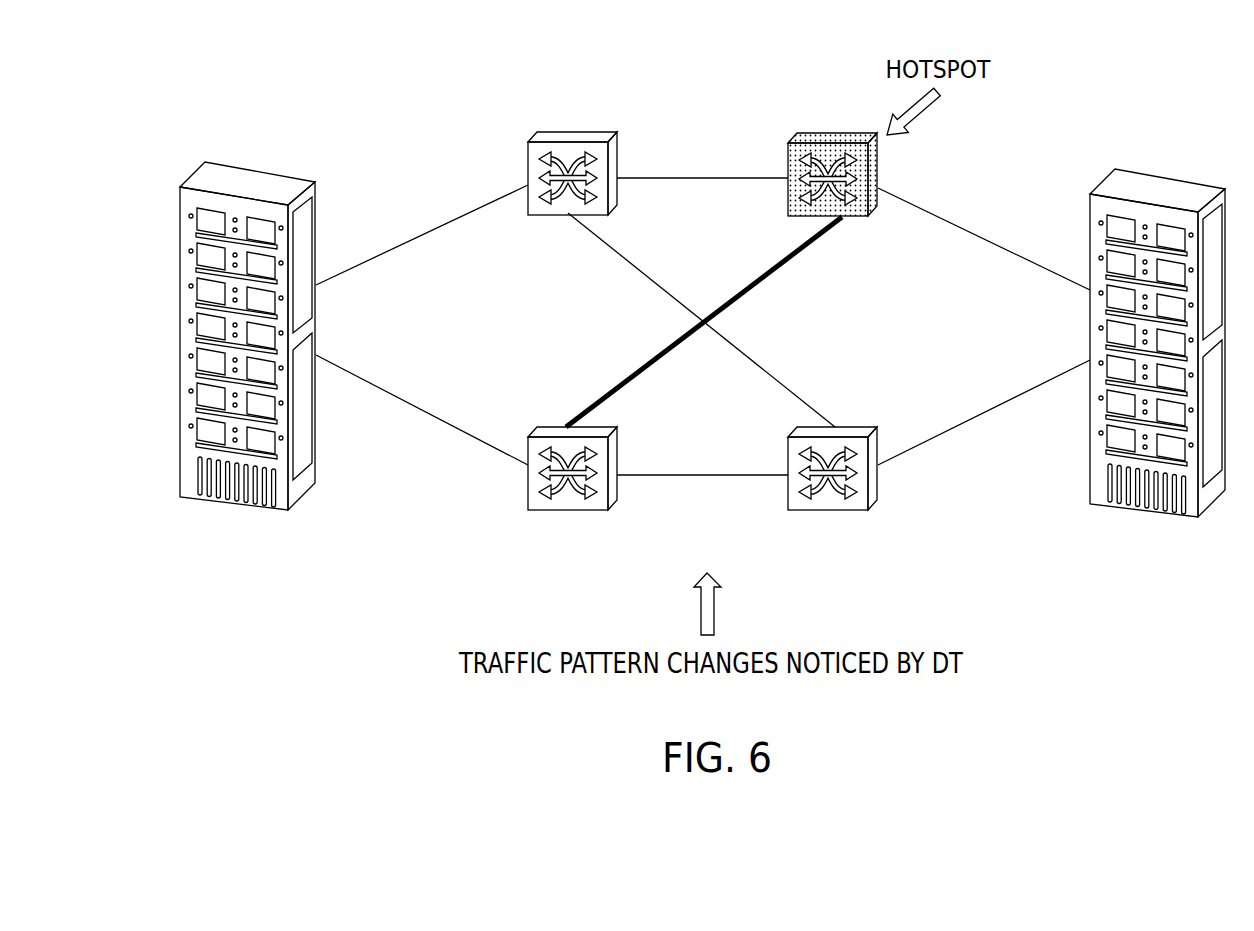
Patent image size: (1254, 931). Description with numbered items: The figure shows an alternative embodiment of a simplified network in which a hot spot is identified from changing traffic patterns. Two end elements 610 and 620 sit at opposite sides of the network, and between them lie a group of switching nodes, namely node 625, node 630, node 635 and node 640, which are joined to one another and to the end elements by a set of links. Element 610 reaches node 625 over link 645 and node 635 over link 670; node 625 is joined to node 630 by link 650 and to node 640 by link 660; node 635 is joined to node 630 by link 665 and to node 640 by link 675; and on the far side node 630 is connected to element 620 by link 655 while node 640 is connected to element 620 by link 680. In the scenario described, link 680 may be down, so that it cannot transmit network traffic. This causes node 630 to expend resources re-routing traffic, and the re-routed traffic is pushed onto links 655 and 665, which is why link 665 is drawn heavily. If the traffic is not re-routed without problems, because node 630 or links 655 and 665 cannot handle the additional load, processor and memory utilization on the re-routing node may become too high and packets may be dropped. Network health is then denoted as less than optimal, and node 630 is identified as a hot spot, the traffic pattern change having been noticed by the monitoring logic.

The server rack 610 is at (257, 163).
The server rack 620 is at (1166, 168).
The network switch 625 is at (565, 132).
The node 630 is at (830, 134).
The network switch 635 is at (570, 512).
The network switch 640 is at (834, 512).
The network link 645 is at (417, 237).
The network link 650 is at (700, 177).
The link 655 is at (989, 241).
The network link 660 is at (647, 276).
The link 665 is at (757, 282).
The network link 670 is at (413, 403).
The network link 675 is at (700, 474).
The link 680 is at (1007, 400).